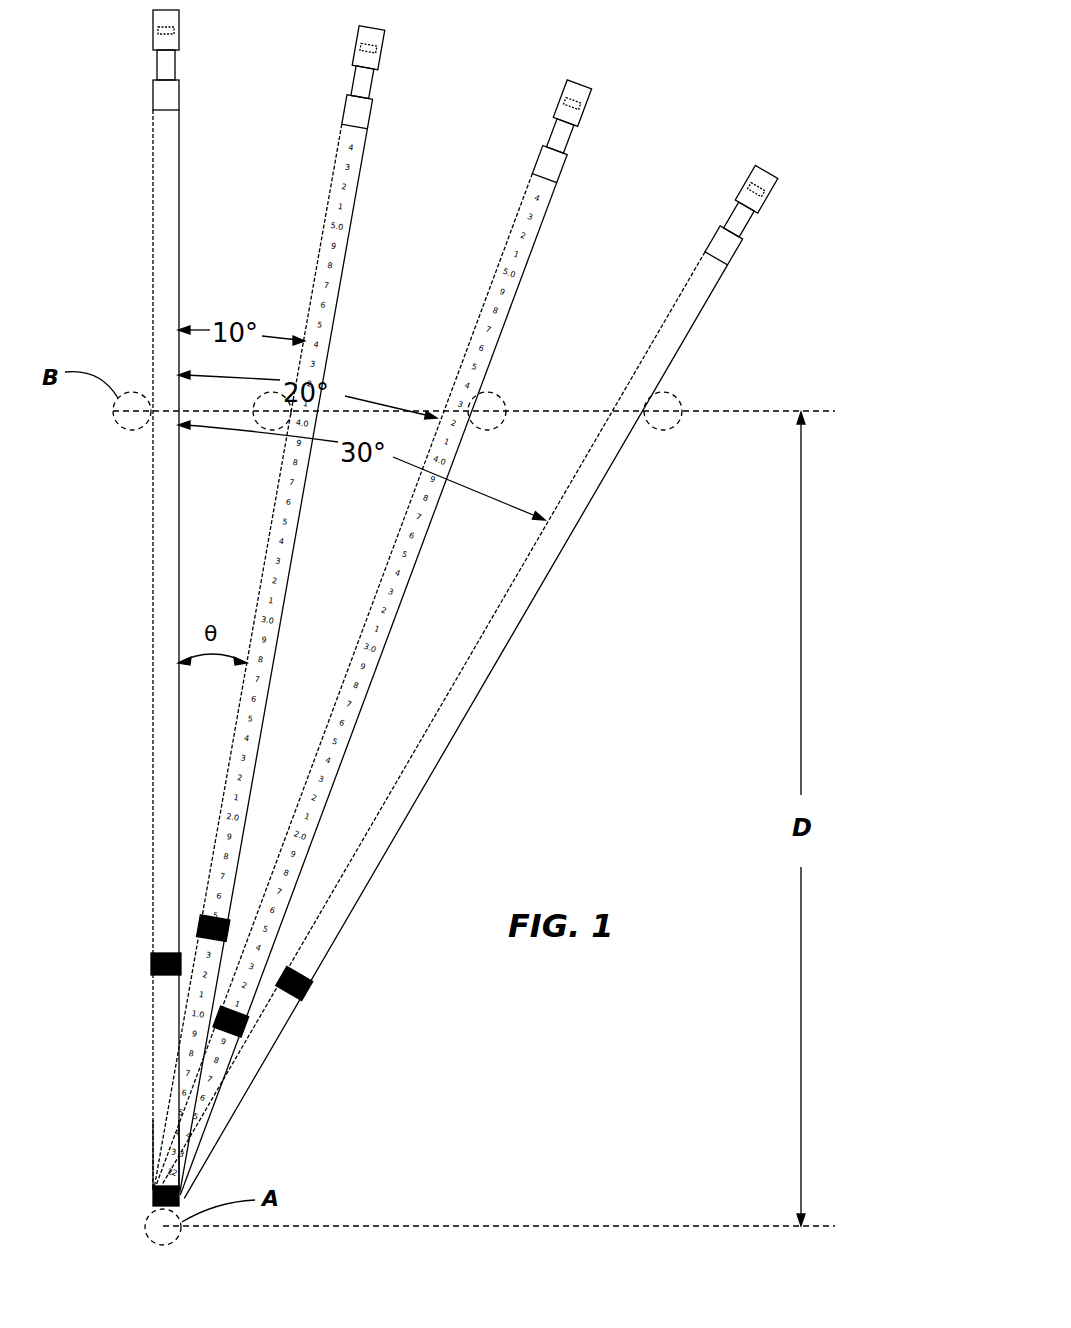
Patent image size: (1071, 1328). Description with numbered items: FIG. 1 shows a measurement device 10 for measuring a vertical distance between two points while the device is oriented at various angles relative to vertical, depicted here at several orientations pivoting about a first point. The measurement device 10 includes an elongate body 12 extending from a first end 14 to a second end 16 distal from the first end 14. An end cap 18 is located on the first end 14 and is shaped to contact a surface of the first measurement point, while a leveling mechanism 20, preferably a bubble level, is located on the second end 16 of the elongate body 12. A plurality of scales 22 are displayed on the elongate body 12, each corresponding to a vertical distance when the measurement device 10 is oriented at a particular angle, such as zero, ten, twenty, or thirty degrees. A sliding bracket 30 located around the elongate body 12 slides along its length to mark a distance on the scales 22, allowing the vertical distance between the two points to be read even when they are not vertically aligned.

The measurement device 10 is at (744, 296).
The elongate body 12 is at (152, 568).
The first end 14 is at (152, 1161).
The second end 16 is at (152, 98).
The end cap 18 is at (150, 1207).
The leveling mechanism 20 is at (162, 27).
The plurality of scales 22 is at (162, 209).
The sliding bracket 30 is at (302, 988).